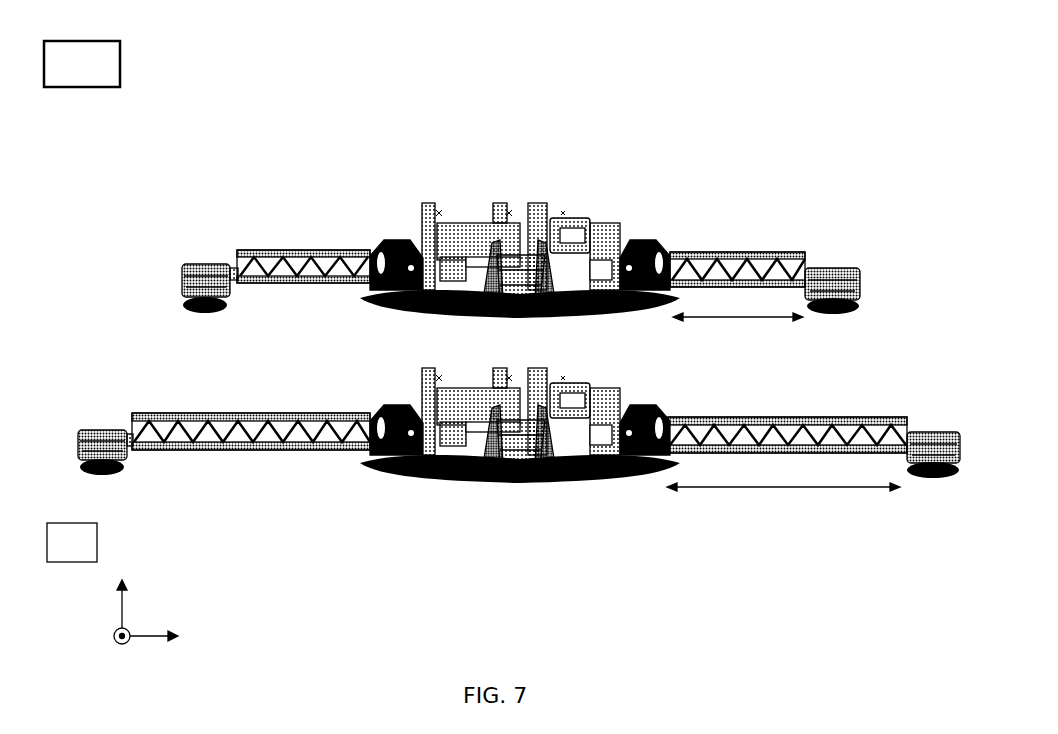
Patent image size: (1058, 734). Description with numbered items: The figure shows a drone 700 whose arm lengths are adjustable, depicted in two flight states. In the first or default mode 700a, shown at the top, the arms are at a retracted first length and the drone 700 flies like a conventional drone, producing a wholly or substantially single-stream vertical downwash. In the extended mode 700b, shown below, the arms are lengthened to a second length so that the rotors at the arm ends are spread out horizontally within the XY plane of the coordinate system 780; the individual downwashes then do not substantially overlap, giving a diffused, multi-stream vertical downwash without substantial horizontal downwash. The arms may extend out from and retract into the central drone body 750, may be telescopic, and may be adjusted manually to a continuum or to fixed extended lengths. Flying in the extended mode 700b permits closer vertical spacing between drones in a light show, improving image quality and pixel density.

The drone 700 is at (82, 64).
The first mode 700a is at (176, 205).
The extended mode 700b is at (178, 400).
The drone body 750 is at (543, 210).
The coordinate system 780 is at (125, 592).